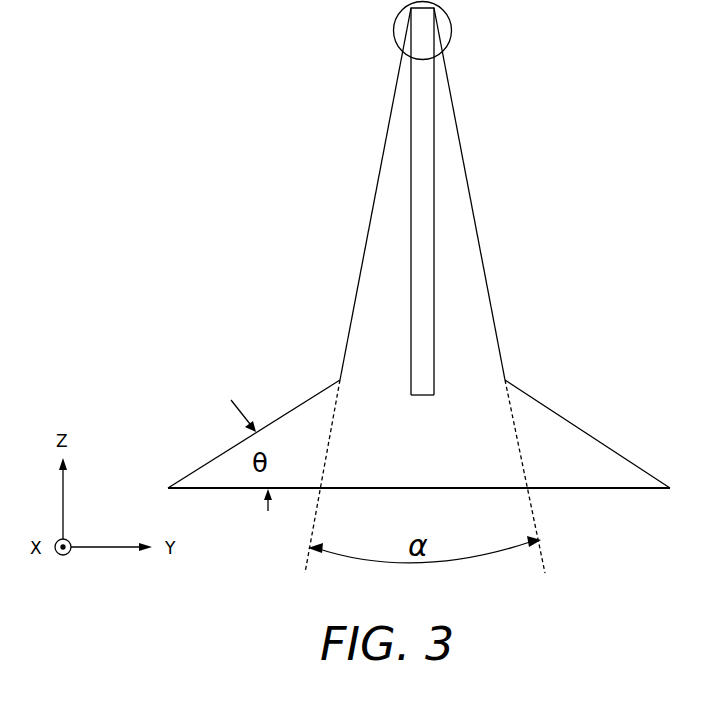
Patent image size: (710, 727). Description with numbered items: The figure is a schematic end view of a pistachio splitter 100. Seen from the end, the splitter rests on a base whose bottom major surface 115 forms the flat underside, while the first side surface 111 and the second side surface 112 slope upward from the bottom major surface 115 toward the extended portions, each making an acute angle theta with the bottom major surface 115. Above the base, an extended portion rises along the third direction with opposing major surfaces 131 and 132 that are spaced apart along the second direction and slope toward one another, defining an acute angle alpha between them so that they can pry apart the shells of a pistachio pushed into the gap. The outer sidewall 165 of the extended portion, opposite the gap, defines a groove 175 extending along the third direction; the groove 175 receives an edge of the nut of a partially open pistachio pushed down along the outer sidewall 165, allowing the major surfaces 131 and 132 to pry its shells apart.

The pistachio splitter 100 is at (192, 121).
The first side surface 111 is at (300, 404).
The second side surface 112 is at (613, 448).
The bottom major surface 115 is at (613, 489).
The first major surface 131 is at (398, 77).
The second major surface 132 is at (456, 124).
The outer sidewall 165 is at (395, 178).
The groove 175 is at (422, 255).